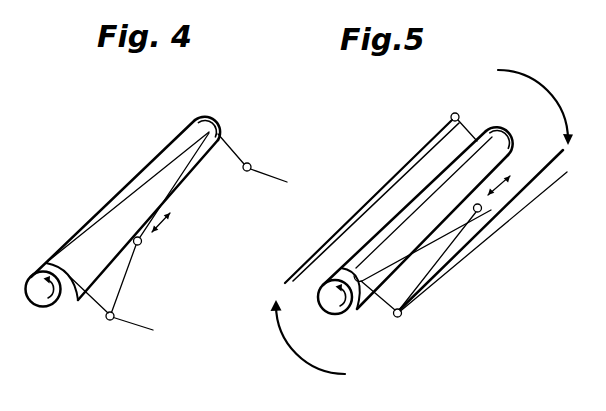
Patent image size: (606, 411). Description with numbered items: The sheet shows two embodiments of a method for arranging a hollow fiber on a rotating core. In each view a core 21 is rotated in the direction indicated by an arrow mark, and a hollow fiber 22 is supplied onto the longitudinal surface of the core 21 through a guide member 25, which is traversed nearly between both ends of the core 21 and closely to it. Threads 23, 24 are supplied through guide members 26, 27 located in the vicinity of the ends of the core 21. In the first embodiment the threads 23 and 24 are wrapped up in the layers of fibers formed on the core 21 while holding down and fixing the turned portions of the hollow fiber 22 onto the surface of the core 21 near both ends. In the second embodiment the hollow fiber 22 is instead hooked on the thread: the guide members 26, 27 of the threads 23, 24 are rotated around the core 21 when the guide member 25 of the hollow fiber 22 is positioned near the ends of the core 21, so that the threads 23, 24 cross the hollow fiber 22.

In FIG. 4, the core 21 is at (163, 143).
In FIG. 5, the core 21 is at (346, 316).
In FIG. 4, the hollow fiber 22 is at (133, 180).
In FIG. 5, the hollow fiber 22 is at (448, 225).
In FIG. 4, the thread 23 is at (150, 332).
In FIG. 5, the thread 23 is at (536, 198).
In FIG. 4, the thread 24 is at (287, 183).
In FIG. 5, the thread 24 is at (490, 126).
In FIG. 4, the guide member 25 is at (138, 246).
In FIG. 5, the guide member 25 is at (478, 212).
In FIG. 4, the guide member 26 is at (110, 328).
In FIG. 5, the guide member 26 is at (398, 317).
In FIG. 4, the guide member 27 is at (246, 171).
In FIG. 5, the guide member 27 is at (453, 113).